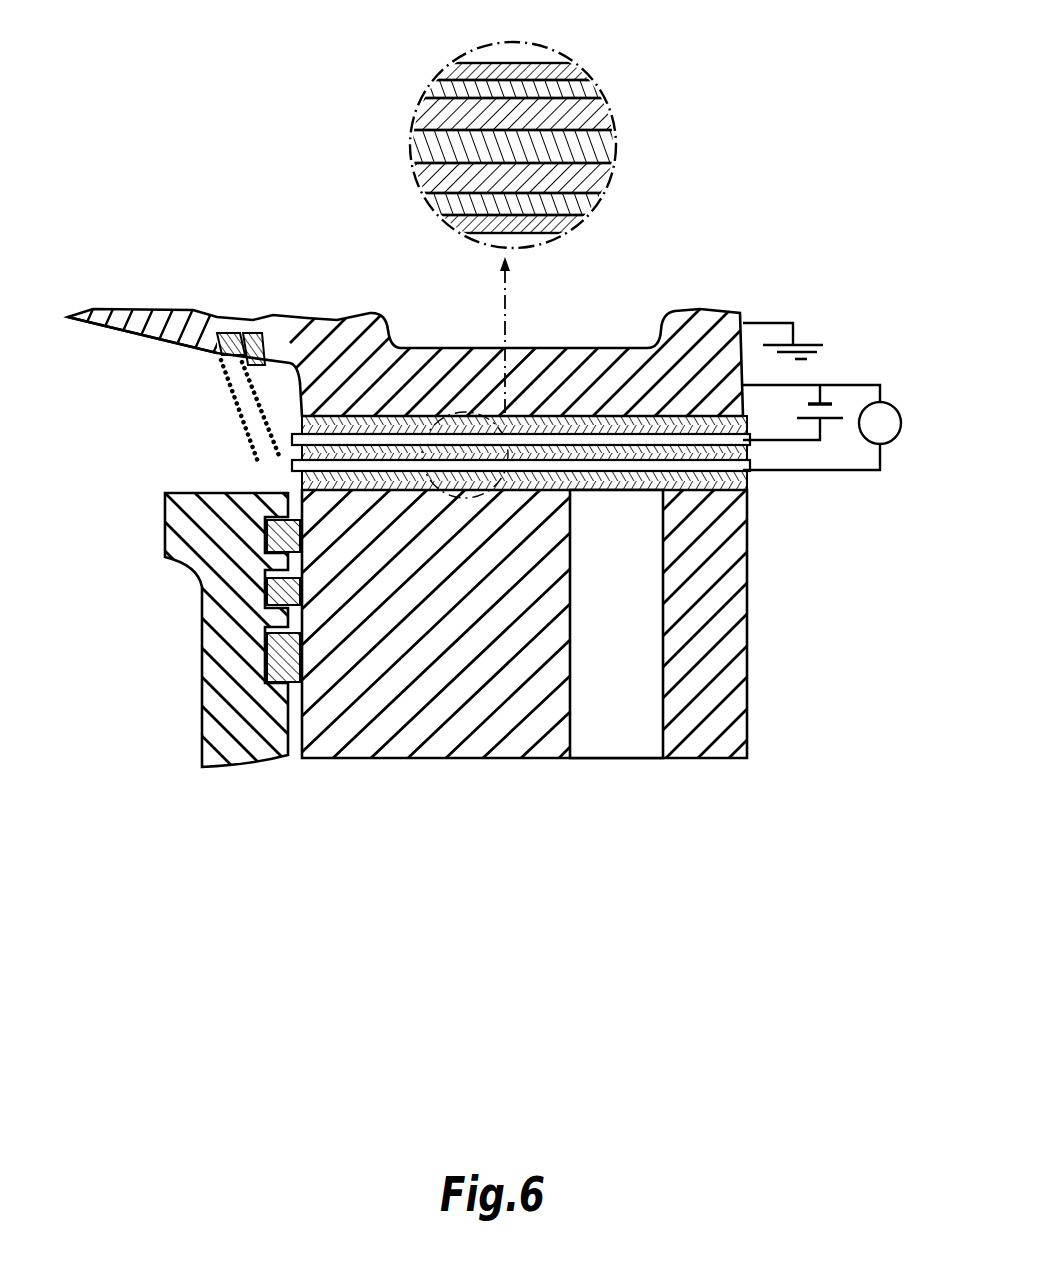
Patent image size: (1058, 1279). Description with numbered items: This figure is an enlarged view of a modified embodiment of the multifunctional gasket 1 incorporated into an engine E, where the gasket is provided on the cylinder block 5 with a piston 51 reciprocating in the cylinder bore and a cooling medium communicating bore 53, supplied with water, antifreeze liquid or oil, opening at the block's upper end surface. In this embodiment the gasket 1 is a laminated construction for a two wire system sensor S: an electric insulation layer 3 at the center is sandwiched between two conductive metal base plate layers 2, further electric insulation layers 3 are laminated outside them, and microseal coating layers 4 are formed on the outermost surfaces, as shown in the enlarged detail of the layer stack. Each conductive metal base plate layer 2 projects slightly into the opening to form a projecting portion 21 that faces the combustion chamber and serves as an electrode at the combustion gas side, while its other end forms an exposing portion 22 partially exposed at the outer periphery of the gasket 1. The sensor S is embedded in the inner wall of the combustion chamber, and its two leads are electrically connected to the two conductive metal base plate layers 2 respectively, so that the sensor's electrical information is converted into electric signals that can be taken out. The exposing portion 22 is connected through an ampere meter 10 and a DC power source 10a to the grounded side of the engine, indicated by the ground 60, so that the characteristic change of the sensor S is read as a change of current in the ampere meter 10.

The multifunctional gasket 1 is at (610, 502).
The conductive metal base plate layer 2 is at (613, 112).
The electric insulation layer 3 is at (597, 85).
The microseal coating layer 4 is at (452, 62).
The cylinder block 5 is at (418, 743).
The ampere meter 10 is at (893, 405).
The DC power source 10a is at (830, 428).
The projecting portion 21 is at (294, 470).
The exposing portion 22 is at (750, 473).
The piston 51 is at (227, 665).
The cooling medium communicating bore 53 is at (623, 737).
The ground 60 is at (805, 335).
The engine E is at (166, 567).
The sensor S is at (228, 335).